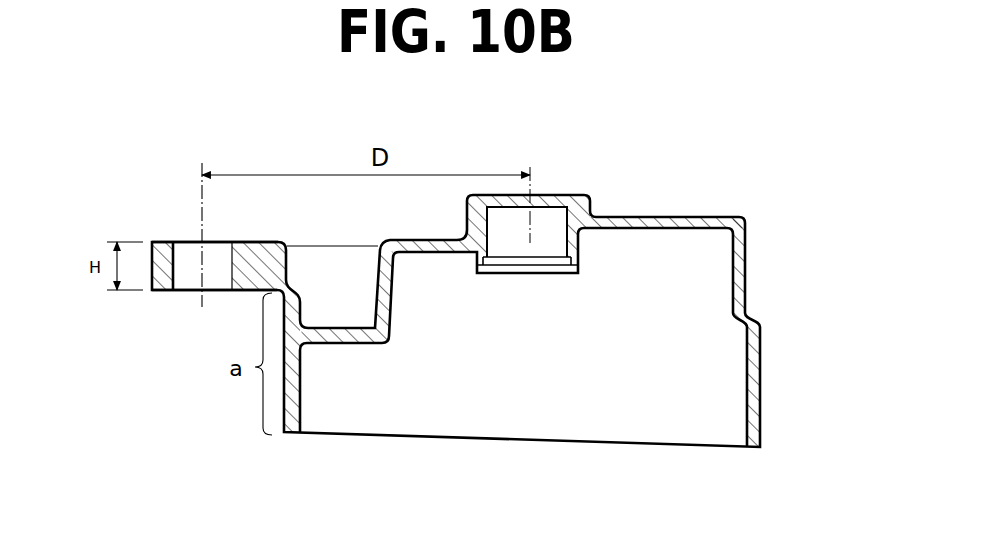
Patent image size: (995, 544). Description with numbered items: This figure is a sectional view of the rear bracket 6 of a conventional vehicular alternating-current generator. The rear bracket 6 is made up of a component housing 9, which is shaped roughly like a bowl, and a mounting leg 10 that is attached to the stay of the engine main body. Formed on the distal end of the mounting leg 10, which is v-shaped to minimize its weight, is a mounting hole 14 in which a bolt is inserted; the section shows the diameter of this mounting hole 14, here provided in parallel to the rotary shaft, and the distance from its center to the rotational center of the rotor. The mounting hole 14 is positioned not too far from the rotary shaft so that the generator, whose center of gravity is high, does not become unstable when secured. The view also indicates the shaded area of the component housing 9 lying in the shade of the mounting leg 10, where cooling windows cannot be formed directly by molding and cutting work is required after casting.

The rear bracket 6 is at (570, 185).
The component housing 9 is at (510, 398).
The mounting leg 10 is at (258, 242).
The mounting hole 14 is at (173, 271).